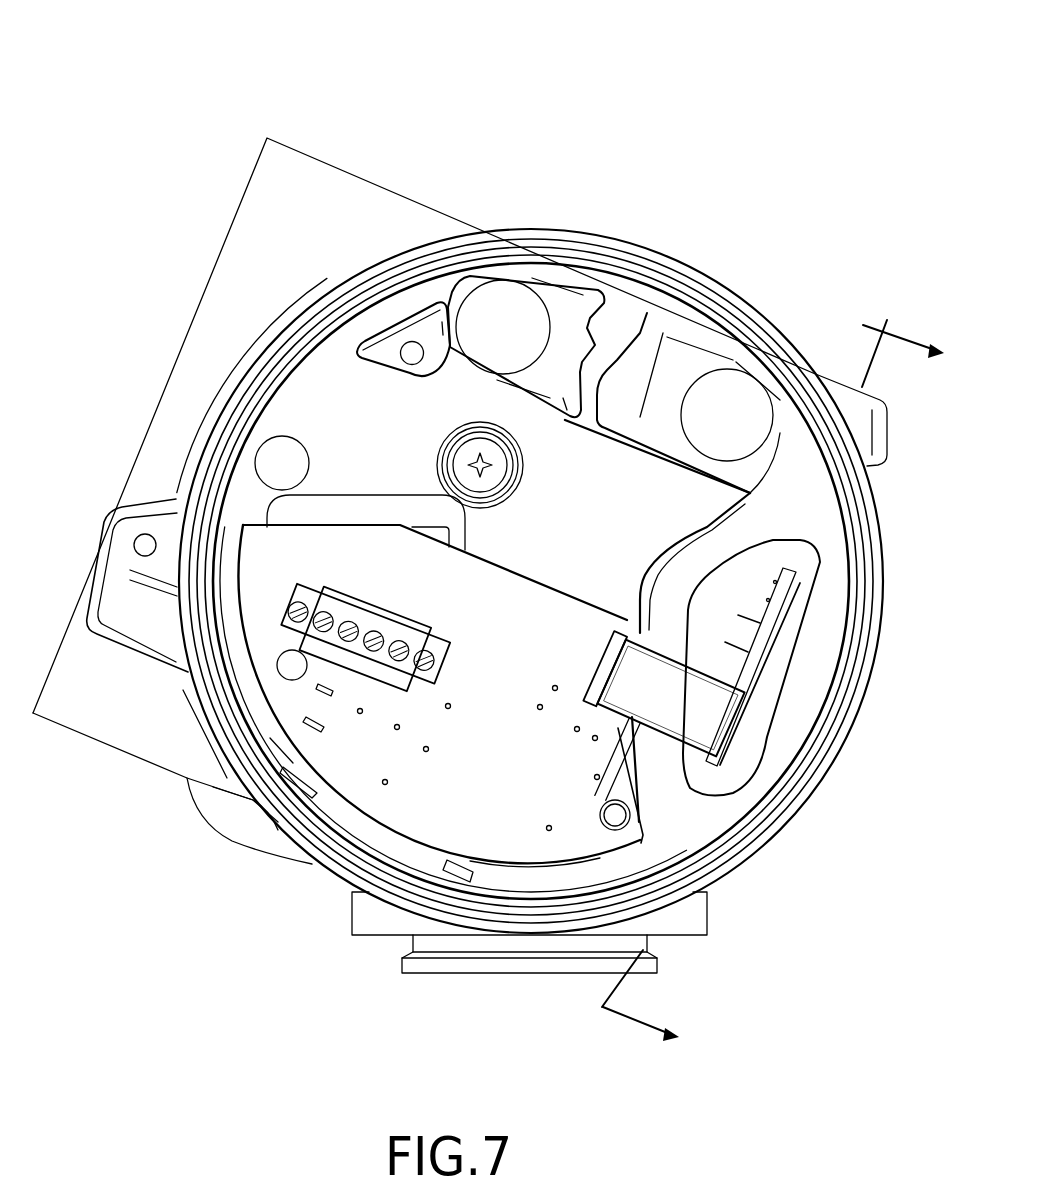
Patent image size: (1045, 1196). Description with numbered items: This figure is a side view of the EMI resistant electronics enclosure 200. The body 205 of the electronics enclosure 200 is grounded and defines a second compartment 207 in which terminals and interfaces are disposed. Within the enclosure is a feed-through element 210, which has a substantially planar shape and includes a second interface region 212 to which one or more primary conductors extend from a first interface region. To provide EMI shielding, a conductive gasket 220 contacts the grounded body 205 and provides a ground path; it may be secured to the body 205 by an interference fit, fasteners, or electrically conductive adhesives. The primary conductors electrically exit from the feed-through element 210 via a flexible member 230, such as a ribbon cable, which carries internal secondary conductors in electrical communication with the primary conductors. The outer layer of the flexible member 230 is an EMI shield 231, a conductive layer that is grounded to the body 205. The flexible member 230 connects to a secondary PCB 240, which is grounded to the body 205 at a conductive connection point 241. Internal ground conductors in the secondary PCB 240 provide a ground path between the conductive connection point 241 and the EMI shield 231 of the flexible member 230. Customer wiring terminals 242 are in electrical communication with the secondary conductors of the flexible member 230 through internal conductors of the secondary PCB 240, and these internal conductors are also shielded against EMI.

The electronics enclosure 200 is at (219, 105).
The body 205 is at (432, 215).
The second compartment 207 is at (318, 406).
The feed-through element 210 is at (777, 595).
The second interface region 212 is at (806, 690).
The gasket 220 is at (715, 782).
The flexible member 230 is at (670, 700).
The EMI shield 231 is at (707, 712).
The secondary PCB 240 is at (457, 818).
The conductive connection point 241 is at (612, 818).
The customer wiring terminals 242 is at (294, 585).